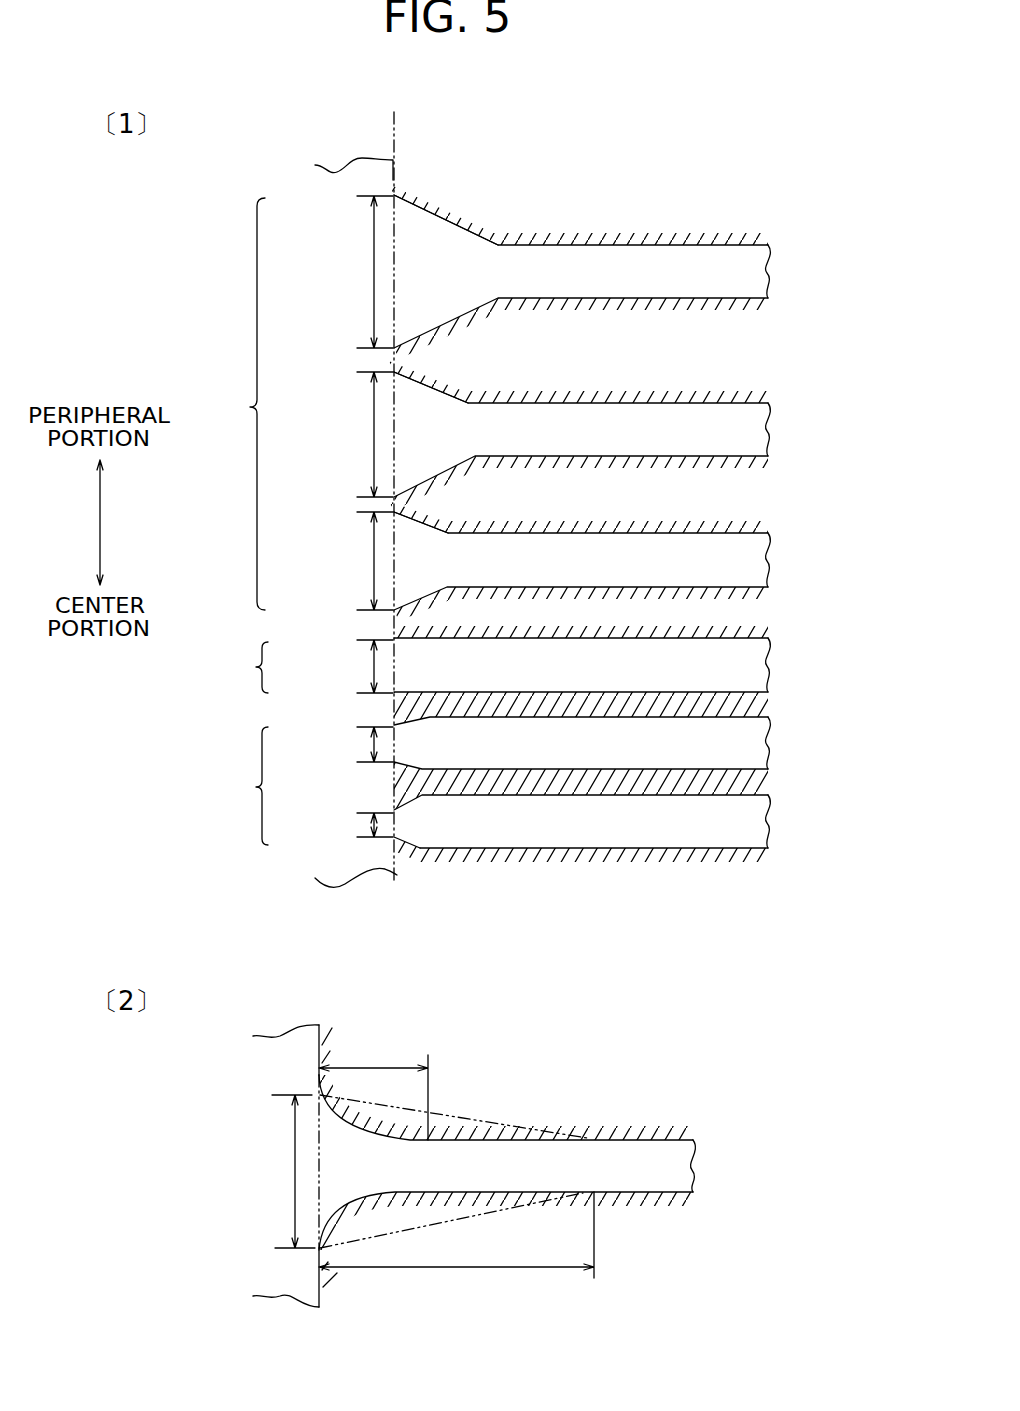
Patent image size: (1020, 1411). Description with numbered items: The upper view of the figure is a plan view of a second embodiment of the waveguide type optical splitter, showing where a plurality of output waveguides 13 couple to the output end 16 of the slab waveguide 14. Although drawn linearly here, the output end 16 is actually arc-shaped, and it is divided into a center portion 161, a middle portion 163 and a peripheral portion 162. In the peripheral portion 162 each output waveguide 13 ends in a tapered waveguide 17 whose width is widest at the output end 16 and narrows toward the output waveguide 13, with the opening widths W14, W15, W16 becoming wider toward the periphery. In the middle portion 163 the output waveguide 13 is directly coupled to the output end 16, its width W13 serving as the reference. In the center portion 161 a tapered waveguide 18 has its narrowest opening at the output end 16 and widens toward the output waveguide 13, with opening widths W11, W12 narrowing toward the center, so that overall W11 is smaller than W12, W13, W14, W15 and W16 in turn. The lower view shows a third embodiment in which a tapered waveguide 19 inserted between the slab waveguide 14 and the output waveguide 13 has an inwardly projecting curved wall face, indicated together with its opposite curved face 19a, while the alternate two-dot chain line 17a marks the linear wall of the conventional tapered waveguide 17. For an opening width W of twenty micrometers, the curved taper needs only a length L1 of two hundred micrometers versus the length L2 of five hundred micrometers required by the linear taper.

The output waveguide 13 is at (543, 722).
The slab waveguide 14 is at (336, 172).
The output end 16 is at (391, 485).
The tapered waveguide 17 is at (452, 218).
The virtual taper line 17a is at (490, 1122).
The tapered waveguide 18 is at (420, 797).
The tapered waveguide 19 is at (388, 1124).
The curved inlet surface 19a is at (363, 1185).
The center portion 161 is at (256, 787).
The peripheral portion 162 is at (250, 407).
The middle portion 163 is at (256, 667).
The opening width W11 is at (374, 825).
The opening width W12 is at (374, 744).
The opening width W13 is at (374, 667).
The opening width W14 is at (374, 557).
The opening width W15 is at (374, 430).
The opening width W16 is at (374, 268).
The length L1 is at (375, 1068).
The length L2 is at (482, 1268).
The opening width W is at (295, 1178).